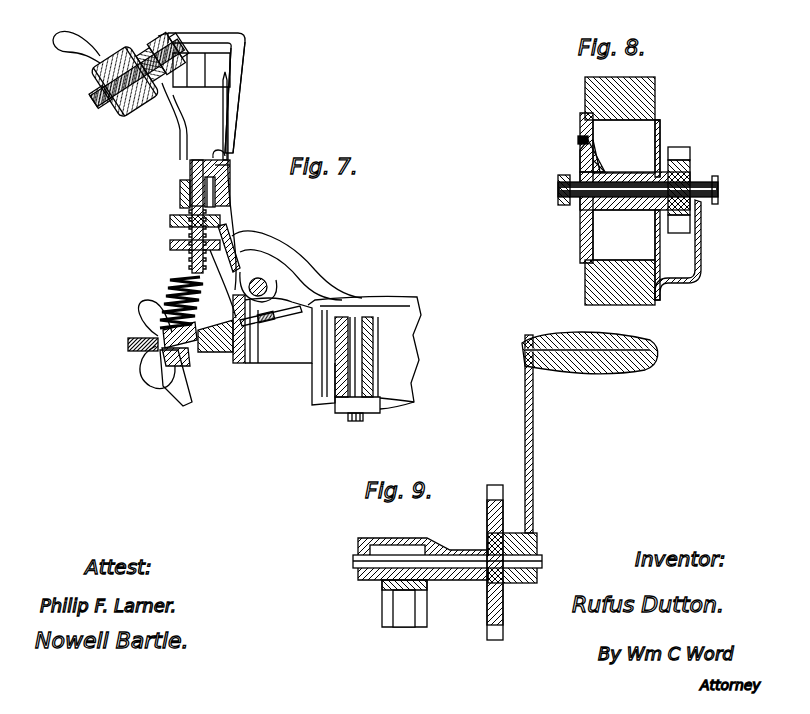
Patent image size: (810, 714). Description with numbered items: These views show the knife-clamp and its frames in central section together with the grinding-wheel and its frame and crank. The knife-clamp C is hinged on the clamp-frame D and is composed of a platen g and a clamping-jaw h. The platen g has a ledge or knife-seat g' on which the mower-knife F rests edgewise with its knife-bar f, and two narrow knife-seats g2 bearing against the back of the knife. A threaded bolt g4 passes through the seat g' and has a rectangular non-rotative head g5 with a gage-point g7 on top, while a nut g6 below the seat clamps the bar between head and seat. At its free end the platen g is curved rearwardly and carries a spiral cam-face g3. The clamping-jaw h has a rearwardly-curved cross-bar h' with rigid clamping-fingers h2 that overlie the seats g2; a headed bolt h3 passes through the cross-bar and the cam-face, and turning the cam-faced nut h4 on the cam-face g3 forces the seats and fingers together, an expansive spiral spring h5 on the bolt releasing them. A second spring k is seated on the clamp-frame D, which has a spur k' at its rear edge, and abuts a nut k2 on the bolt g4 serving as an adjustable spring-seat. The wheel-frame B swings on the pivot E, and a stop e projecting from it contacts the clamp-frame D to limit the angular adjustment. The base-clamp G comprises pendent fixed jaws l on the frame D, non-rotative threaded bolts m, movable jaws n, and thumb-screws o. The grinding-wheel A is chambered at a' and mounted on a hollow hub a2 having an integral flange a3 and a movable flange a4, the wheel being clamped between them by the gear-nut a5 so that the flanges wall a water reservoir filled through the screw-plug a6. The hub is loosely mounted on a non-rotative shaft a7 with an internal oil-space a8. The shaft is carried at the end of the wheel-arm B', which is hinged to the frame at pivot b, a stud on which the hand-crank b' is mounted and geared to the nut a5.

In FIG. 7, the cam-faced nut h4 is at (76, 56).
In FIG. 7, the headed bolt h3 is at (132, 80).
In FIG. 7, the expansive spiral spring h5 is at (146, 40).
In FIG. 7, the rearwardly-curved cross-bar h' is at (168, 42).
In FIG. 7, the spiral cam-face g3 is at (118, 33).
In FIG. 7, the clamping-jaw h is at (201, 83).
In FIG. 7, the clamping-fingers h2 is at (240, 97).
In FIG. 7, the knife-clamp C is at (258, 66).
In FIG. 7, the platen g is at (196, 106).
In FIG. 7, the narrow knife-seats g2 is at (224, 92).
In FIG. 7, the mower-knife F is at (228, 156).
In FIG. 7, the rectangular non-rotative head g5 is at (190, 165).
In FIG. 7, the gage-point g7 is at (225, 166).
In FIG. 7, the knife-bar f is at (222, 186).
In FIG. 7, the ledge or knife-seat g' is at (171, 194).
In FIG. 7, the nut k2 is at (185, 250).
In FIG. 7, the threaded bolt or screw g4 is at (172, 218).
In FIG. 7, the nut g6 is at (172, 243).
In FIG. 7, the spur k' is at (167, 302).
In FIG. 7, the expansive spiral spring k is at (171, 288).
In FIG. 7, the hub a is at (199, 256).
In FIG. 8, the hub a is at (620, 178).
In FIG. 7, the non-rotative threaded bolt m is at (133, 343).
In FIG. 7, the thumb-screw o is at (157, 353).
In FIG. 7, the movable jaws n is at (203, 380).
In FIG. 7, the clamp-frame D is at (272, 329).
In FIG. 7, the base-clamp G is at (310, 384).
In FIG. 7, the stop e is at (271, 322).
In FIG. 7, the chamber a' is at (274, 275).
In FIG. 8, the chamber a' is at (624, 146).
In FIG. 7, the integral flange a3 is at (248, 245).
In FIG. 8, the integral flange a3 is at (586, 160).
In FIG. 7, the hollow hub a2 is at (226, 228).
In FIG. 8, the hollow hub a2 is at (624, 235).
In FIG. 7, the wheel-frame B is at (364, 344).
In FIG. 9, the wheel-frame B is at (392, 603).
In FIG. 7, the pendent fixed jaws l is at (314, 415).
In FIG. 7, the pivot E is at (355, 428).
In FIG. 8, the grinding-wheel A is at (629, 191).
In FIG. 8, the movable flange a4 is at (660, 135).
In FIG. 8, the nut a5 is at (690, 165).
In FIG. 8, the screw-plug a6 is at (578, 140).
In FIG. 8, the non-rotative shaft a7 is at (558, 188).
In FIG. 8, the oil-space a8 is at (580, 210).
In FIG. 8, the wheel-arm B' is at (624, 250).
In FIG. 9, the wheel-arm B' is at (423, 549).
In FIG. 9, the pivot b is at (458, 558).
In FIG. 9, the hand-crank b' is at (572, 486).